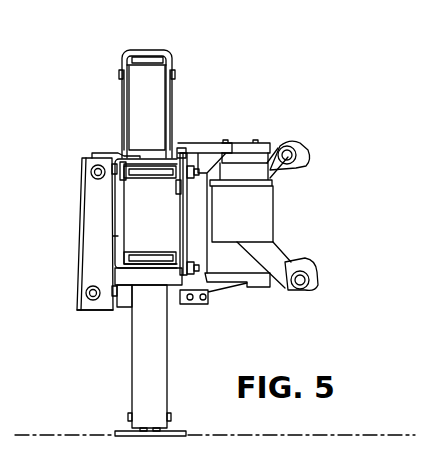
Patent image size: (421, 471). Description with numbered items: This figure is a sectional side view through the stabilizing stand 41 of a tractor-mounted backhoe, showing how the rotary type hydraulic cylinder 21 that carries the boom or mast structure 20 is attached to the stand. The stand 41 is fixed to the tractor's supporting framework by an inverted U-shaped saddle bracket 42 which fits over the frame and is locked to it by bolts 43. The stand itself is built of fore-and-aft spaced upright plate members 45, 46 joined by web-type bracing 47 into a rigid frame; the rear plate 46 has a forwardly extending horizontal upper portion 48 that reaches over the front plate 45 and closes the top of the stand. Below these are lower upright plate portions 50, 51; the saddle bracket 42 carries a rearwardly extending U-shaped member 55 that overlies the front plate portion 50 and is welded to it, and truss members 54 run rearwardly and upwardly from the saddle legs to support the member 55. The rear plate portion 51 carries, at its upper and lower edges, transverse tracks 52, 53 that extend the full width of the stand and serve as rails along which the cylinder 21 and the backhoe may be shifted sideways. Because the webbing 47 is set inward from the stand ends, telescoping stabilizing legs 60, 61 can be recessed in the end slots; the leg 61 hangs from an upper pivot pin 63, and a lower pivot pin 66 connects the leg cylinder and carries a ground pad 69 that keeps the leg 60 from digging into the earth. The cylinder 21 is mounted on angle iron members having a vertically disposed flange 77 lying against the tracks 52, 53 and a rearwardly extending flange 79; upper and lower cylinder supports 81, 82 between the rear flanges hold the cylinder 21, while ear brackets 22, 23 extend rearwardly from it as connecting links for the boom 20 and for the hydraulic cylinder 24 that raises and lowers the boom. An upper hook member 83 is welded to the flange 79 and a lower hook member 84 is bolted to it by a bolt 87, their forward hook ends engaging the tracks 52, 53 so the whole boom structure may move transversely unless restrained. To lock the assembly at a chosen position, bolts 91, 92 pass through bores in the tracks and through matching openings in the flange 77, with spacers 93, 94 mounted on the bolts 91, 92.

The boom or mast structure 20 is at (305, 262).
The rotary type hydraulic cylinder 21 is at (270, 206).
The ear bracket 22 is at (285, 286).
The ear bracket 23 is at (283, 168).
The hydraulic cylinder 24 is at (297, 148).
The stabilizing stand 41 is at (176, 96).
The saddle bracket 42 is at (82, 214).
The bolts 43 is at (93, 286).
The front upright plate member 45 is at (124, 101).
The rear upright plate member 46 is at (172, 113).
The web-type bracing 47 is at (130, 153).
The horizontal upper portion 48 is at (153, 54).
The lower front upright plate portion 50 is at (104, 300).
The lower rear upright plate portion 51 is at (176, 221).
The upper transverse track 52 is at (176, 194).
The lower transverse track 53 is at (180, 268).
The truss member 54 is at (124, 310).
The U-shaped member 55 is at (114, 243).
The stabilizing leg 60 is at (160, 370).
The stabilizing leg 61 is at (139, 83).
The pivot pin 63 is at (174, 86).
The pivot pin 66 is at (171, 417).
The pad 69 is at (155, 437).
The vertically disposed flange 77 is at (186, 218).
The rearwardly extending flange 79 is at (199, 152).
The upper cylinder support 81 is at (238, 143).
The lower cylinder support 82 is at (254, 287).
The upper hook member 83 is at (183, 148).
The lower hook member 84 is at (187, 304).
The bolt 87 is at (203, 300).
The bolt 91 is at (194, 179).
The bolt 92 is at (200, 268).
The spacer 93 is at (141, 176).
The spacer 94 is at (134, 258).